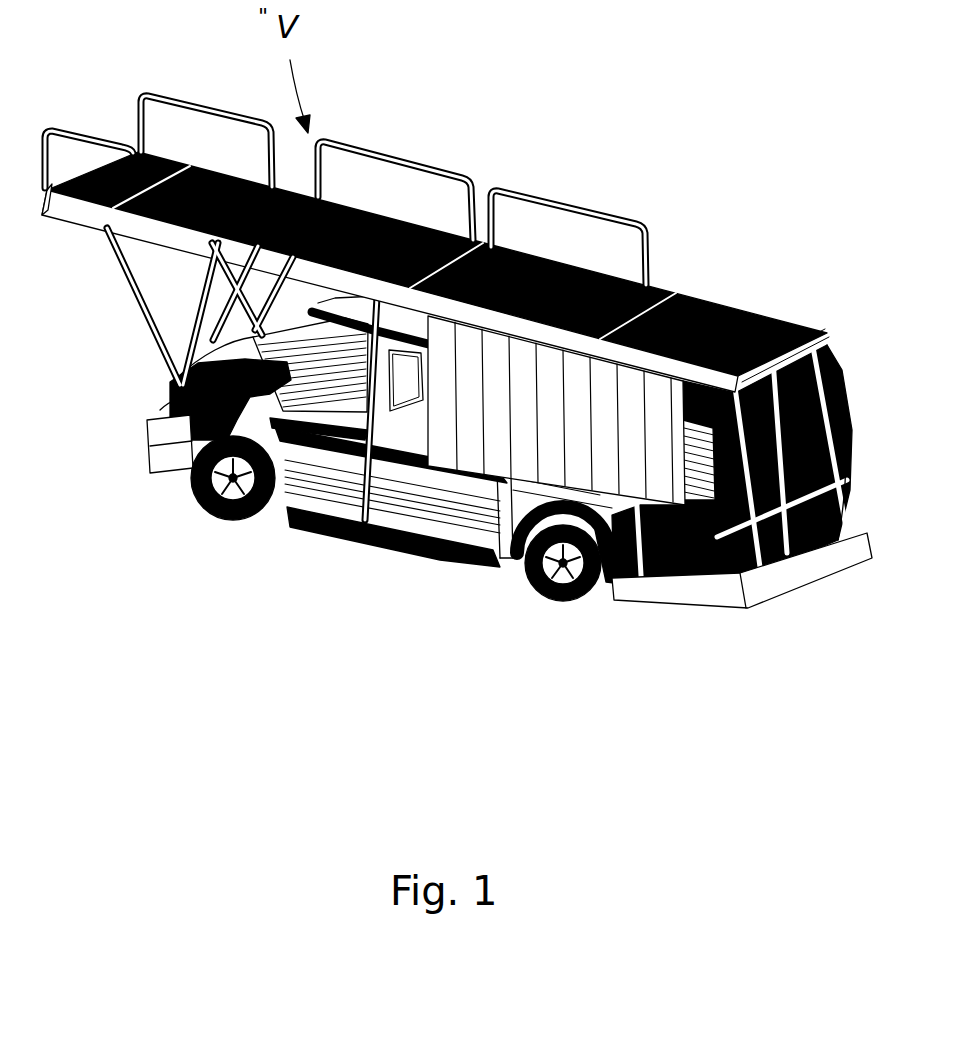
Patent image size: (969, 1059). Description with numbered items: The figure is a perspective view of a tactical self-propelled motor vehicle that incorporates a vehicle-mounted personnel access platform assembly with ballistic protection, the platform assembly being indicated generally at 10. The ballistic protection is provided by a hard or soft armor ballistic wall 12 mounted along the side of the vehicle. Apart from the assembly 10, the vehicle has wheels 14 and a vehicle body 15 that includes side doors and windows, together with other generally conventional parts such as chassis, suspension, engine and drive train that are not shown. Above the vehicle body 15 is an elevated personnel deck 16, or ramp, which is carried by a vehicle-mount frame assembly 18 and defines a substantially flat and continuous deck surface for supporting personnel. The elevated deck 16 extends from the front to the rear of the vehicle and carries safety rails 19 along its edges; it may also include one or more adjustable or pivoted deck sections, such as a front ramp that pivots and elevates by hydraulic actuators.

The platform assembly 10 is at (623, 610).
The ballistic wall 12 is at (556, 410).
The wheels 14 is at (215, 506).
The vehicle body 15 is at (843, 412).
The elevated personnel deck 16 is at (113, 160).
The vehicle-mount frame assembly 18 is at (141, 309).
The safety rails 19 is at (505, 195).